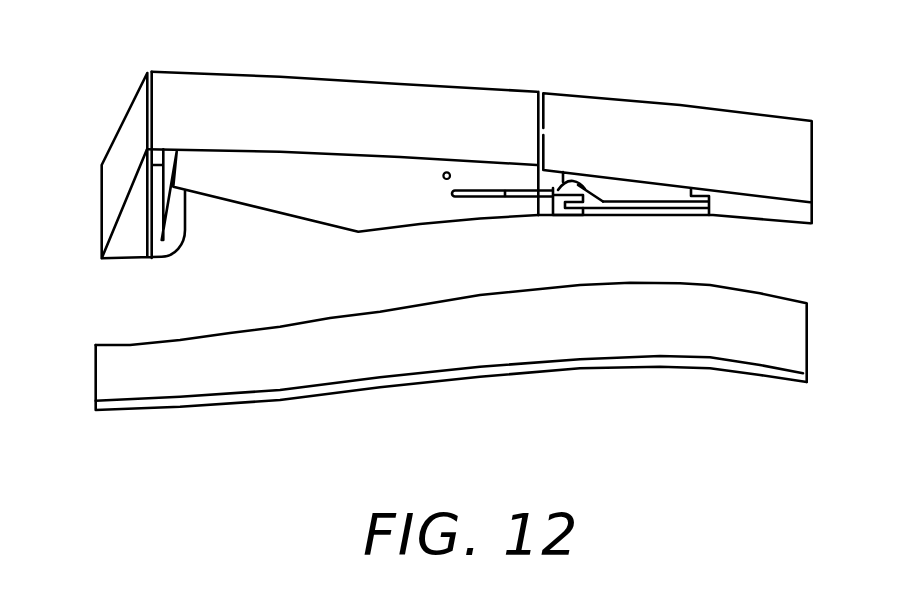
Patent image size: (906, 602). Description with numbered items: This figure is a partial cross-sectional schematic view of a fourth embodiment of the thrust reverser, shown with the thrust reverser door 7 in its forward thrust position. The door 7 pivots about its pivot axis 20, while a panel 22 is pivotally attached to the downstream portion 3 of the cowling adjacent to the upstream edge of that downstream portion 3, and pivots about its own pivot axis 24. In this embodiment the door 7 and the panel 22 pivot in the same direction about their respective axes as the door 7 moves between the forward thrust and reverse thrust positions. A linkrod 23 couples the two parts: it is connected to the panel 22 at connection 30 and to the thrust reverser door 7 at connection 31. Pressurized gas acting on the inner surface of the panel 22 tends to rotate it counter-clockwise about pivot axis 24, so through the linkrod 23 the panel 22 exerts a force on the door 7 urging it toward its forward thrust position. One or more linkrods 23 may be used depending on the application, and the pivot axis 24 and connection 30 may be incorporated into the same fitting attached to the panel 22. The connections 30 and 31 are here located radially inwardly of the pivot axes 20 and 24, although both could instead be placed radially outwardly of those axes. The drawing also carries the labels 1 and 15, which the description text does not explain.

The frame / housing end cover 1 is at (141, 156).
The thrust reverser door 7 is at (310, 102).
The downstream portion of the cowling 3 is at (770, 133).
The hinge assembly 15 is at (674, 246).
The pivot axis 20 is at (443, 180).
The connection 31 is at (467, 192).
The linkrod 23 is at (510, 192).
The pivot axis 24 is at (553, 215).
The connection 30 is at (598, 217).
The panel 22 is at (665, 196).